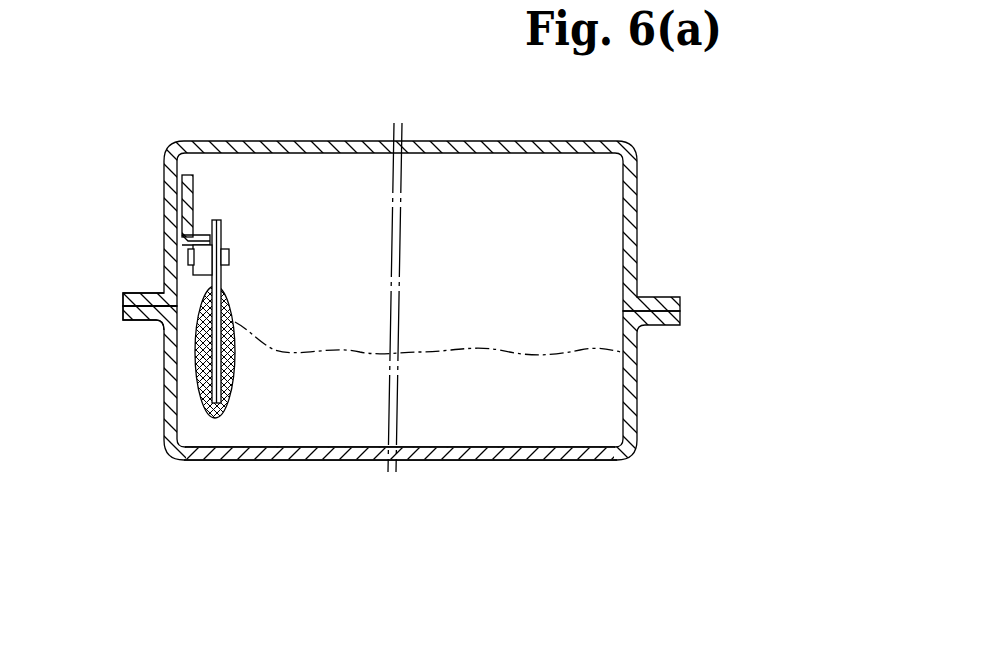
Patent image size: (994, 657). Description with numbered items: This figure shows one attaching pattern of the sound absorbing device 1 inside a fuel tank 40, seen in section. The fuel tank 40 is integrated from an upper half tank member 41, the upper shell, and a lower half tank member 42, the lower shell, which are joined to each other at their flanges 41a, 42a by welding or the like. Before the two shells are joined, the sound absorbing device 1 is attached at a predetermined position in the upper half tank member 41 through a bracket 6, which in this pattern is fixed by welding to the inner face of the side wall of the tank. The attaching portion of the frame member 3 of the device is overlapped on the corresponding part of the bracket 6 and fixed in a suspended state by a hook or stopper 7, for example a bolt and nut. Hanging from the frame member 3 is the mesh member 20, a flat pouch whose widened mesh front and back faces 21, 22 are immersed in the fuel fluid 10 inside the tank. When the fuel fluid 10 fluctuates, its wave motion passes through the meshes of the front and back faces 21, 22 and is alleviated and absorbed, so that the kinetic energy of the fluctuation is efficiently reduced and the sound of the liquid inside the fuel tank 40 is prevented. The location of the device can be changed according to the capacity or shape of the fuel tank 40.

The sound absorbing device 1 is at (236, 297).
The frame member 3 is at (221, 222).
The bracket 6 is at (198, 184).
The hook or stopper 7 is at (229, 253).
The fuel fluid 10 is at (505, 420).
The mesh member 20 is at (279, 428).
The front face 21 is at (236, 382).
The back face 22 is at (196, 360).
The fuel tank 40 is at (450, 300).
The upper half tank member 41 is at (414, 226).
The flange 41a is at (141, 293).
The lower half tank member 42 is at (416, 380).
The flange 42a is at (135, 322).